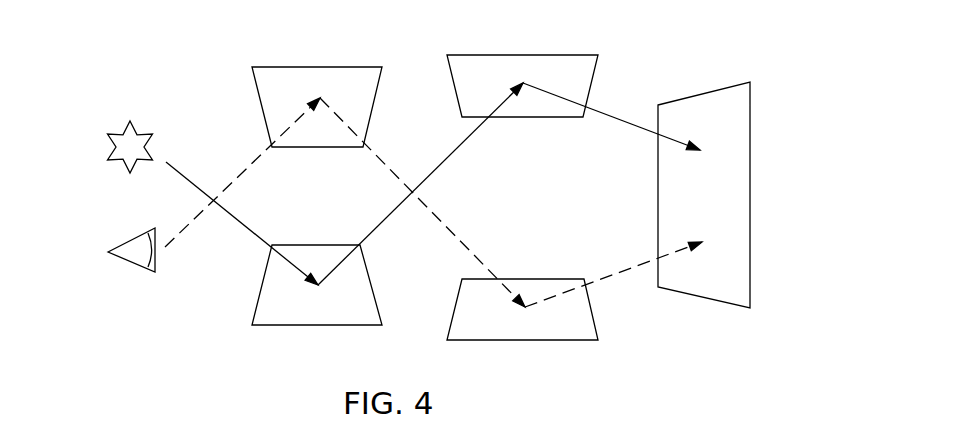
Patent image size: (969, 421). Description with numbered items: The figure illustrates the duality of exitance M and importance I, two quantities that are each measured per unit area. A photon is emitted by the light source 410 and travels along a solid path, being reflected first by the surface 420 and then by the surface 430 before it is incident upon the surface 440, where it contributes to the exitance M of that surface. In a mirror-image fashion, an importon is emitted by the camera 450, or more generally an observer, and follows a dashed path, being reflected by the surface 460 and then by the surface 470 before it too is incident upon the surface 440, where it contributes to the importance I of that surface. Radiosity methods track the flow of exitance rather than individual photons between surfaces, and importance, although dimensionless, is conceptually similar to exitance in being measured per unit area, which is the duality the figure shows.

The light source 410 is at (103, 147).
The camera 450 is at (120, 260).
The surface 460 is at (333, 65).
The surface 430 is at (555, 55).
The surface 420 is at (308, 327).
The surface 470 is at (560, 339).
The surface 440 is at (750, 193).